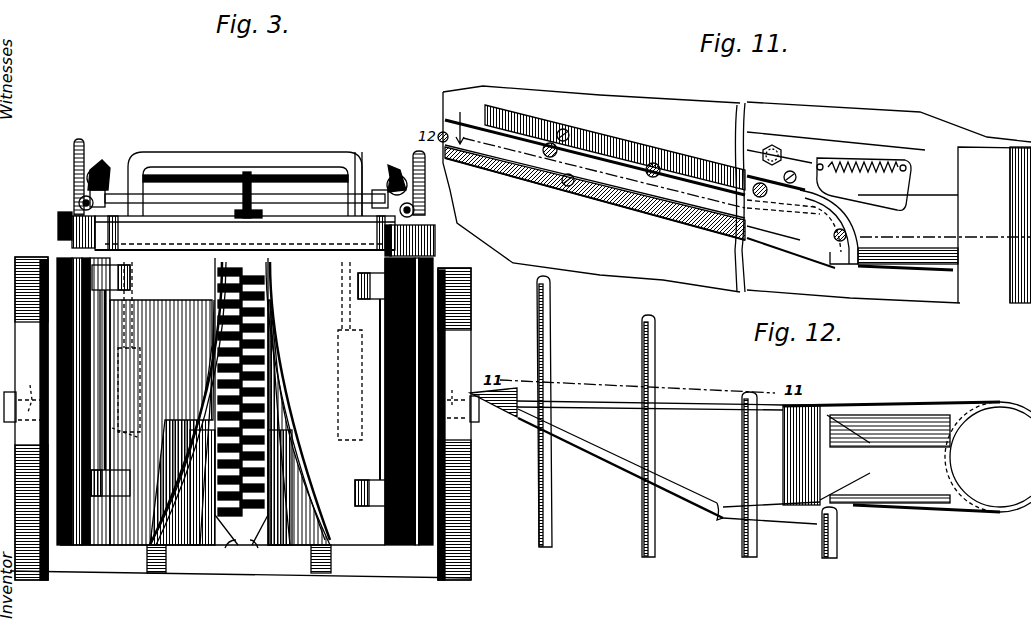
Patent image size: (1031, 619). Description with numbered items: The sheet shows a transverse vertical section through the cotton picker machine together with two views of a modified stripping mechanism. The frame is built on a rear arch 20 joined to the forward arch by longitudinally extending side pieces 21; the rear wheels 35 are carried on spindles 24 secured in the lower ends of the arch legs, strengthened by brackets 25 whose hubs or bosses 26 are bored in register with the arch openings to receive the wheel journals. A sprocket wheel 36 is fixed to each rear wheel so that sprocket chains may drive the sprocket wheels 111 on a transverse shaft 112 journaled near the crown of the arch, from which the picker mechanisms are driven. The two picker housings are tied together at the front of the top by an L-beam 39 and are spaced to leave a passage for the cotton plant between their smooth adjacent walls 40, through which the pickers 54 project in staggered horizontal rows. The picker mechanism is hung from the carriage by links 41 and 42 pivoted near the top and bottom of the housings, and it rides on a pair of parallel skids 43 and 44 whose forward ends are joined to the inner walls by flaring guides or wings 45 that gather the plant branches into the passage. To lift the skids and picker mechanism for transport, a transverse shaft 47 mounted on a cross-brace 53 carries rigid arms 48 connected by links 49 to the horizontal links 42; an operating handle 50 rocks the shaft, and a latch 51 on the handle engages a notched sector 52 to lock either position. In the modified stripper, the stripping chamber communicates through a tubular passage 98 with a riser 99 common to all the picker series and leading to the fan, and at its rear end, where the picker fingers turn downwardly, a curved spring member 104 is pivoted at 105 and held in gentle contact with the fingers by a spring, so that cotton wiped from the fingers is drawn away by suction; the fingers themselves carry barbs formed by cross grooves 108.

In FIG. 3, the rear arch 20 is at (262, 152).
In FIG. 3, the side pieces 21 is at (58, 222).
In FIG. 3, the spindles 24 is at (241, 418).
In FIG. 3, the brackets 25 is at (118, 372).
In FIG. 3, the hubs or bosses 26 is at (140, 438).
In FIG. 3, the rear wheels 35 is at (25, 438).
In FIG. 12, the rear wheels 35 is at (668, 462).
In FIG. 3, the sprocket wheel 36 is at (245, 408).
In FIG. 3, the L-beam 39 is at (296, 251).
In FIG. 3, the smooth adjacent walls 40 is at (233, 549).
In FIG. 3, the link 41 is at (130, 282).
In FIG. 3, the link 42 is at (130, 482).
In FIG. 3, the skid 43 is at (147, 550).
In FIG. 3, the skid 44 is at (331, 555).
In FIG. 3, the guides or wings 45 is at (220, 422).
In FIG. 3, the transverse shaft 47 is at (160, 153).
In FIG. 3, the rigid arms 48 is at (185, 207).
In FIG. 3, the links 49 is at (107, 324).
In FIG. 3, the operating handle 50 is at (258, 200).
In FIG. 3, the latch 51 is at (240, 197).
In FIG. 3, the notched sector 52 is at (245, 173).
In FIG. 3, the cross-brace 53 is at (197, 233).
In FIG. 3, the pickers 54 is at (238, 290).
In FIG. 11, the pickers 54 is at (448, 133).
In FIG. 12, the pickers 54 is at (642, 337).
In FIG. 11, the tubular passage 98 is at (977, 217).
In FIG. 12, the tubular passage 98 is at (891, 457).
In FIG. 11, the riser 99 is at (993, 147).
In FIG. 12, the riser 99 is at (1003, 420).
In FIG. 11, the curved spring member 104 is at (847, 202).
In FIG. 11, the pivot 105 is at (813, 176).
In FIG. 11, the cross grooves 108 is at (887, 163).
In FIG. 3, the sprocket wheels 111 is at (80, 142).
In FIG. 3, the transverse shaft 112 is at (311, 185).